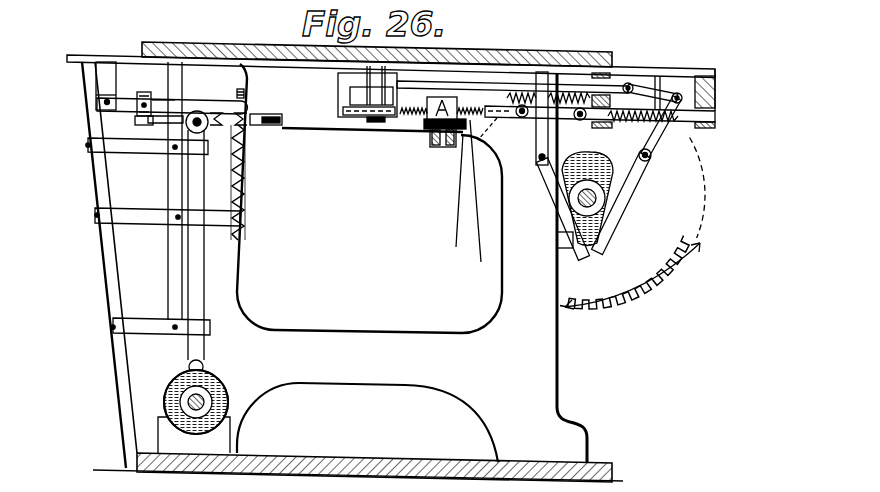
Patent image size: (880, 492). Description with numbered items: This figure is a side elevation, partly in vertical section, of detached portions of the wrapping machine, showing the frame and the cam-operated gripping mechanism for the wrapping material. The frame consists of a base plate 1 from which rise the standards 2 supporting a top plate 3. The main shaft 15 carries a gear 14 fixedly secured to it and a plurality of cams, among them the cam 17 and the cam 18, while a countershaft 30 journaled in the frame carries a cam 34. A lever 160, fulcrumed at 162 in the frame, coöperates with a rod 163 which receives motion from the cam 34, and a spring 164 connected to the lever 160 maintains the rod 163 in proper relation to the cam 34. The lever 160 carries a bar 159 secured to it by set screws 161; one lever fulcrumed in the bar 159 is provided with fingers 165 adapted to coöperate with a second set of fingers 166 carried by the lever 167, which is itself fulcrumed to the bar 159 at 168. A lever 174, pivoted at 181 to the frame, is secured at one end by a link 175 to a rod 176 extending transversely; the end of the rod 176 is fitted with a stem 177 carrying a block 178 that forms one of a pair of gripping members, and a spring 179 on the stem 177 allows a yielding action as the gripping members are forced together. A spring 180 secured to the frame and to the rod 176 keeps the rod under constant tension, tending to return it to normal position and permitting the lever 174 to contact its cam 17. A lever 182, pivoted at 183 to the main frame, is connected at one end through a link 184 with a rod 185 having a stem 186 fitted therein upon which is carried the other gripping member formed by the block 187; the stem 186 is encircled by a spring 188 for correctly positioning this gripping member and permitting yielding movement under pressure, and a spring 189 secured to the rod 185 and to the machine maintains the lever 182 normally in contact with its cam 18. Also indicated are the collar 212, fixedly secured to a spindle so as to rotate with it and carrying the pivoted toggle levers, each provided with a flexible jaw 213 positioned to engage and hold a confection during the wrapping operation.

The base plate 1 is at (391, 463).
The standards 2 is at (222, 283).
The top plate 3 is at (150, 47).
The gear 14 is at (655, 279).
The main shaft 15 is at (616, 226).
The cam 17 is at (615, 192).
The cam 18 is at (559, 236).
The countershaft 30 is at (230, 404).
The cam 34 is at (227, 410).
The bar 159 is at (146, 100).
The lever 160 is at (192, 106).
The set screws 161 is at (146, 88).
The fulcrum 162 is at (104, 103).
The rod 163 is at (199, 196).
The spring 164 is at (244, 140).
The fingers 165 is at (261, 116).
The fingers 166 is at (282, 121).
The lever 167 is at (160, 118).
The fulcrum 168 is at (140, 122).
The lever 174 is at (606, 238).
The link 175 is at (664, 90).
The rod 176 is at (356, 79).
The stem 177 is at (417, 115).
The block 178 is at (430, 104).
The spring 179 is at (429, 125).
The spring 180 is at (562, 97).
The pivot 181 is at (651, 158).
The lever 182 is at (543, 180).
The pivot 183 is at (537, 158).
The link 184 is at (561, 122).
The rod 185 is at (705, 117).
The stem 186 is at (466, 135).
The block 187 is at (443, 100).
The spring 188 is at (477, 150).
The spring 189 is at (677, 128).
The collar 212 is at (423, 186).
The flexible jaw 213 is at (438, 150).